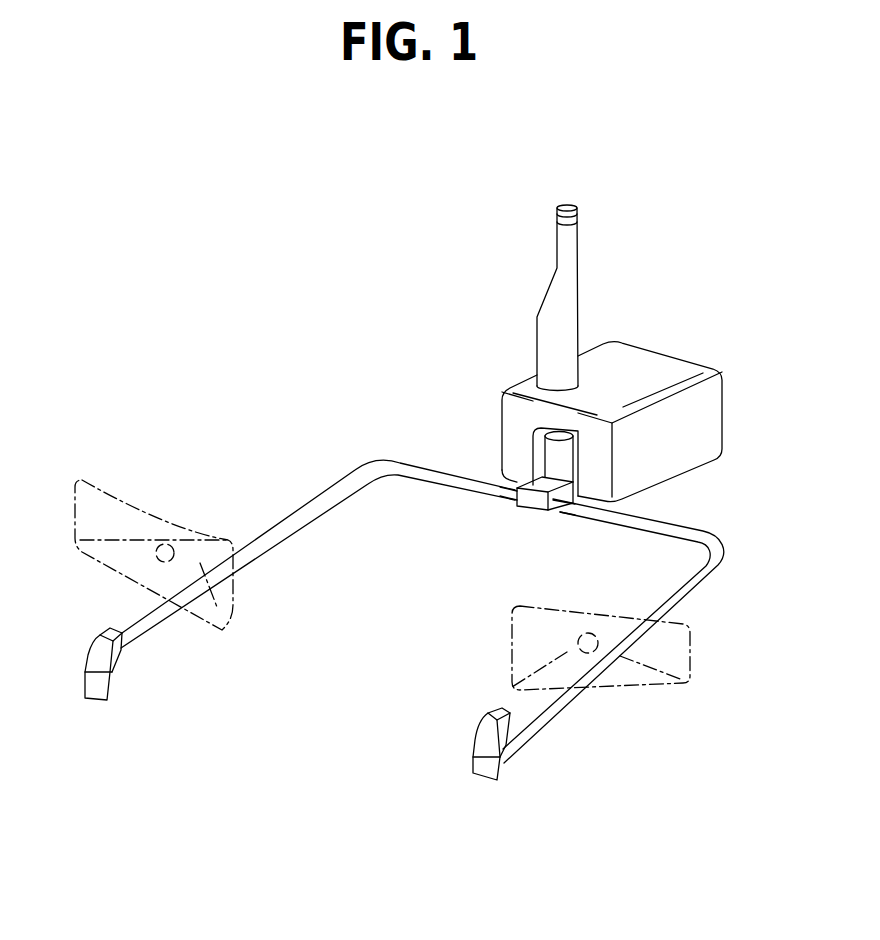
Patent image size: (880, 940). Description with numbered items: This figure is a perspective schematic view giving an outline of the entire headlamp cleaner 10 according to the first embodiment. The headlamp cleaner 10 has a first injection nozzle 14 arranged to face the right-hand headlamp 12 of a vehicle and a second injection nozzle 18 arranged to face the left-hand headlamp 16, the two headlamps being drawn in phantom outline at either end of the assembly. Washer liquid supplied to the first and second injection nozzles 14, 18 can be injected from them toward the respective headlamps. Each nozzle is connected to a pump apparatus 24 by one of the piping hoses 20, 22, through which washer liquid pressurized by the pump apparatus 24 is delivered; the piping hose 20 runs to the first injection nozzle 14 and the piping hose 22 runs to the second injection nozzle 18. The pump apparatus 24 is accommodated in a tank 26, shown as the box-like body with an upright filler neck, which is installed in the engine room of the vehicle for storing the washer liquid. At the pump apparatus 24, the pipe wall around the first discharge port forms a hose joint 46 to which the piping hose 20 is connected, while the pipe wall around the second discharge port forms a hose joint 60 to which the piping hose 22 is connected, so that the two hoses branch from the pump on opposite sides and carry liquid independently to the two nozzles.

The headlamp cleaner 10 is at (368, 290).
The right-hand headlamp 12 is at (100, 500).
The first injection nozzle 14 is at (115, 667).
The left-hand headlamp 16 is at (627, 680).
The second injection nozzle 18 is at (490, 733).
The piping hose 20 is at (272, 543).
The piping hose 22 is at (689, 601).
The pump apparatus 24 is at (527, 519).
The tank 26 is at (660, 360).
The hose joint 46 is at (512, 496).
The hose joint 60 is at (552, 508).